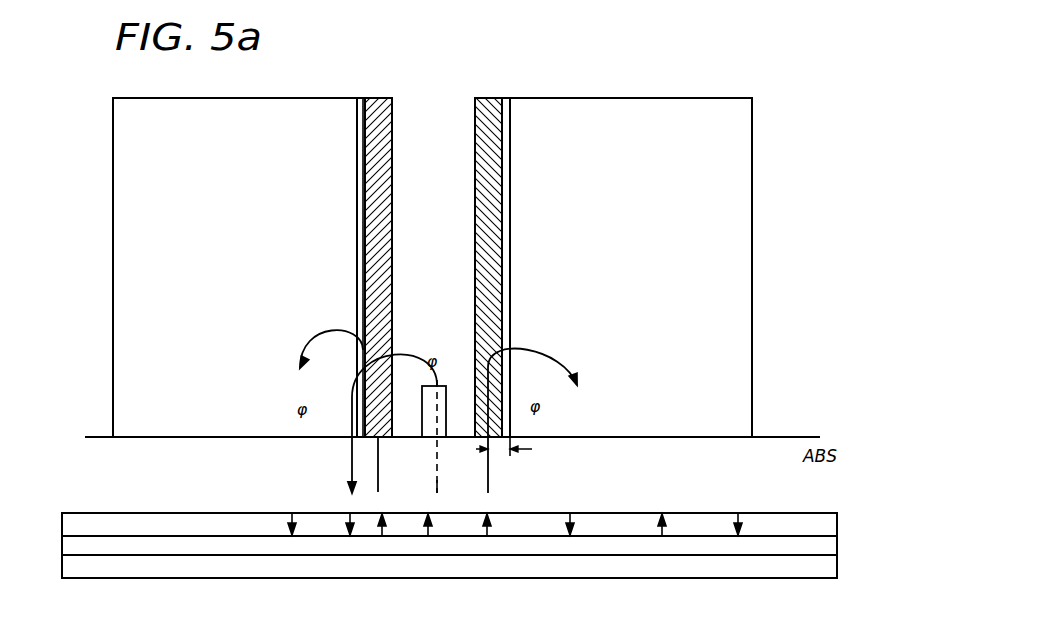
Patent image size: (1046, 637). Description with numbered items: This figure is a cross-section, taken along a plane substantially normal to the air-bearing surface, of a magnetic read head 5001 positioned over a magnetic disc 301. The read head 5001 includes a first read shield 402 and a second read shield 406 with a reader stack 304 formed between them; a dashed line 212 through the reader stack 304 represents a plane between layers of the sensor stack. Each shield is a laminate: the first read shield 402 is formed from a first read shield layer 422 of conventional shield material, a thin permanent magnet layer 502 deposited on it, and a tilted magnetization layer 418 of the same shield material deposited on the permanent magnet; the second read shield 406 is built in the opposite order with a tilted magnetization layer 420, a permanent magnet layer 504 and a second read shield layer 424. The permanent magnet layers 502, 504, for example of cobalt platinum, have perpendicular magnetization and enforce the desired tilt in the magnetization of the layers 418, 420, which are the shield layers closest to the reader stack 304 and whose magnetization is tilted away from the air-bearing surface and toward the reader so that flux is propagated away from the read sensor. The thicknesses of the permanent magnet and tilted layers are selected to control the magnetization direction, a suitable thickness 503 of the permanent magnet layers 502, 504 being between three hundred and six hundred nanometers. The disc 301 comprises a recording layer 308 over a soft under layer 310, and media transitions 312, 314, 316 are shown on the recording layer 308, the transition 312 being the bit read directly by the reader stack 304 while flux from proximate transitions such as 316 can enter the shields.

The first read shield 402 is at (392, 93).
The second read shield 406 is at (475, 93).
The first read shield layer 422 is at (242, 271).
The second read shield layer 424 is at (587, 271).
The permanent magnet layer 502 is at (360, 153).
The permanent magnet layer 504 is at (505, 157).
The tilted magnetization layer 418 is at (380, 133).
The tilted magnetization layer 420 is at (488, 120).
The read head 5001 is at (762, 196).
The reader stack 304 is at (442, 386).
The thickness 503 is at (512, 468).
The dashed line 212 is at (437, 484).
The disc 301 is at (160, 587).
The recording layer 308 is at (73, 520).
The soft under layer 310 is at (77, 568).
The media transition 314 is at (378, 527).
The media transition 312 is at (426, 532).
The media transition 316 is at (489, 528).